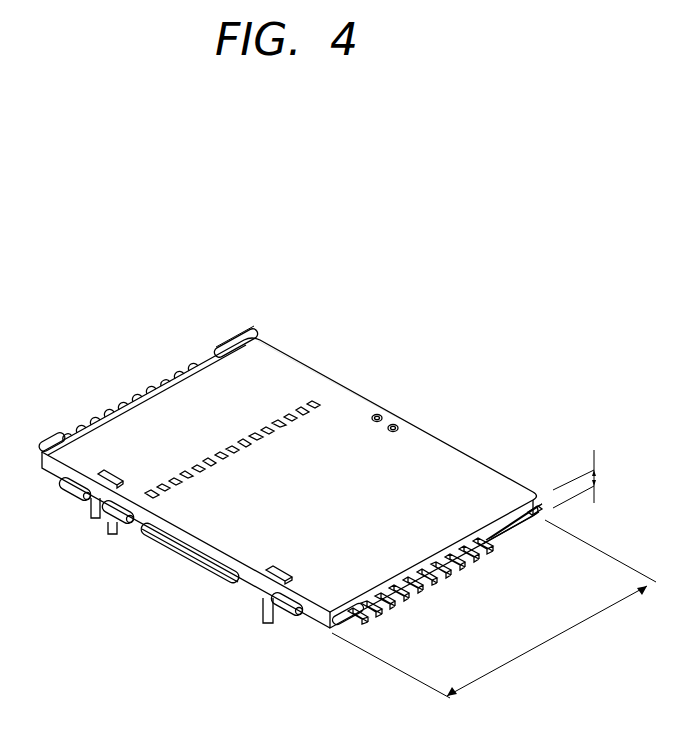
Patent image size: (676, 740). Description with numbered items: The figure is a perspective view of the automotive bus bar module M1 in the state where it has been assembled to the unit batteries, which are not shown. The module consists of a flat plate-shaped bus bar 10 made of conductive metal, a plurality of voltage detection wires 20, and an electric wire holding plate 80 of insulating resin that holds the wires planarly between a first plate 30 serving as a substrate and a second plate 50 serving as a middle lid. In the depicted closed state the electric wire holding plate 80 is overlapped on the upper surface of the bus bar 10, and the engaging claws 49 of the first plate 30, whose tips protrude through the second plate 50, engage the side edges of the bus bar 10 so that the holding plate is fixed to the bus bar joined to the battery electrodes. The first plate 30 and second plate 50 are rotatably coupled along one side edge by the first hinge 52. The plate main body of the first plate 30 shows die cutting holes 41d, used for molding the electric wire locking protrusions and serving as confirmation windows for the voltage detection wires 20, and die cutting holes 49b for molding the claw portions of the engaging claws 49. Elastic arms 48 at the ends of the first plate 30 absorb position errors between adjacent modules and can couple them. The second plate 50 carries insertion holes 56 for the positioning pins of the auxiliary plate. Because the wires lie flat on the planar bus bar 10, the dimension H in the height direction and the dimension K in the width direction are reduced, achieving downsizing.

The bus bar 10 is at (186, 563).
The voltage detection wires 20 is at (453, 576).
The first plate 30 is at (487, 478).
The die cutting holes 41d is at (251, 438).
The elastic arms 48 is at (60, 432).
The engaging claws 49 is at (98, 519).
The die cutting holes 49b is at (109, 472).
The second plate 50 is at (506, 538).
The first hinge 52 is at (172, 578).
The insertion holes 56 is at (394, 425).
The electric wire holding plate 80 is at (331, 368).
The automotive bus bar module M1 is at (474, 421).
The dimension in the height direction H is at (583, 479).
The dimension in the width direction K is at (494, 609).